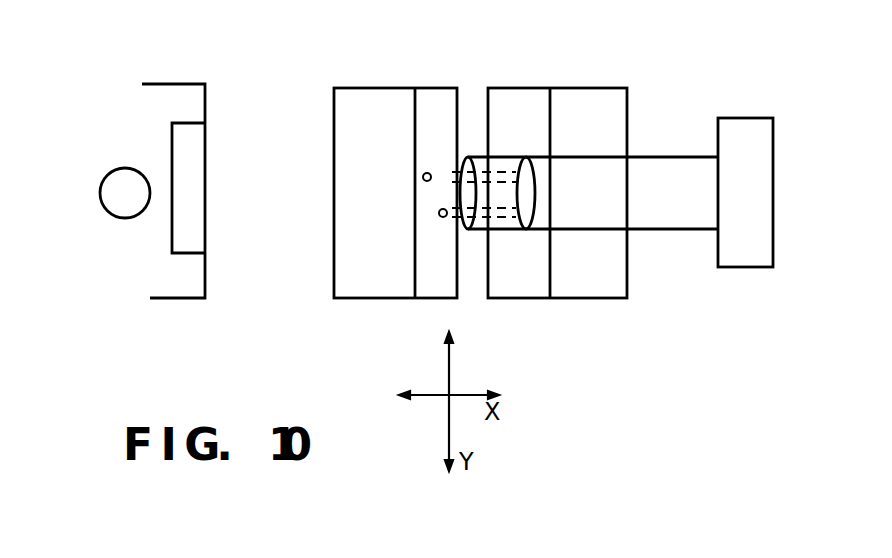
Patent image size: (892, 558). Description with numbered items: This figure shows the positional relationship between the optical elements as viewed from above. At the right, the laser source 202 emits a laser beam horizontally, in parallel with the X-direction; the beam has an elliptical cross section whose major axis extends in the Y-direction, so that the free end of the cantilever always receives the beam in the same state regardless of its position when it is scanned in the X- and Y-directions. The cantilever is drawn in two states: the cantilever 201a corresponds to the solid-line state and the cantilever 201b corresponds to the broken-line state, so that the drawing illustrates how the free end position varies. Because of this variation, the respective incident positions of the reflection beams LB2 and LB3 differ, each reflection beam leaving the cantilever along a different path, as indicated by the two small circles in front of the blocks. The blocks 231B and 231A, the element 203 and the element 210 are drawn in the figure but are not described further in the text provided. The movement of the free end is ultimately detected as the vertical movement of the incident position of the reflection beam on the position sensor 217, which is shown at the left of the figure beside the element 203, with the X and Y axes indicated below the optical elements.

The holder bracket 203 is at (193, 97).
The position sensor 217 is at (188, 242).
The light source 210 is at (127, 187).
The second optical block 231B is at (430, 98).
The first optical block 231A is at (525, 98).
The laser source 202 is at (762, 178).
The cantilever 201b is at (498, 170).
The cantilever 201a is at (483, 210).
The reflection beam LB3 is at (423, 178).
The reflection beam LB2 is at (440, 215).